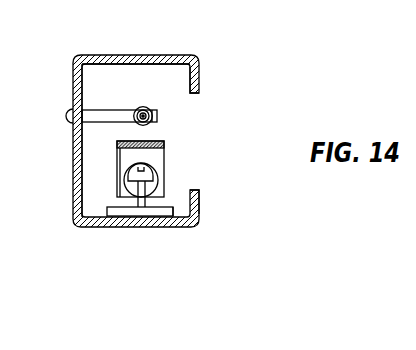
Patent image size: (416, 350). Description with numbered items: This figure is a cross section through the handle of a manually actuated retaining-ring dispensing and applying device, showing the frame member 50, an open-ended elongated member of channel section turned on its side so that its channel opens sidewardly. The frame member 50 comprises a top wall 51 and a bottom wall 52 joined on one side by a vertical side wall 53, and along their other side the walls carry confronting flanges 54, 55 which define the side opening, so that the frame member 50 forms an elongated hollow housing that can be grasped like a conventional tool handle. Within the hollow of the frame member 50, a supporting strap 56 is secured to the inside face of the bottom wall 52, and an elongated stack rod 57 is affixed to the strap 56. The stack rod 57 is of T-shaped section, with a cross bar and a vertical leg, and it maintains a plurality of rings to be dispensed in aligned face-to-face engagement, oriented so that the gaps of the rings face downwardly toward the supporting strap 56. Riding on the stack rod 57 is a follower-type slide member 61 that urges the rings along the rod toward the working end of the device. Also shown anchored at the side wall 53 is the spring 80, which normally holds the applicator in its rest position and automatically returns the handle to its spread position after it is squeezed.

The frame member 50 is at (73, 219).
The top wall 51 is at (153, 55).
The bottom wall 52 is at (140, 216).
The vertical side wall 53 is at (78, 156).
The flange 54 is at (199, 77).
The flange 55 is at (199, 202).
The supporting strap 56 is at (168, 213).
The stack rod 57 is at (163, 190).
The slide member 61 is at (156, 157).
The spring 80 is at (157, 116).